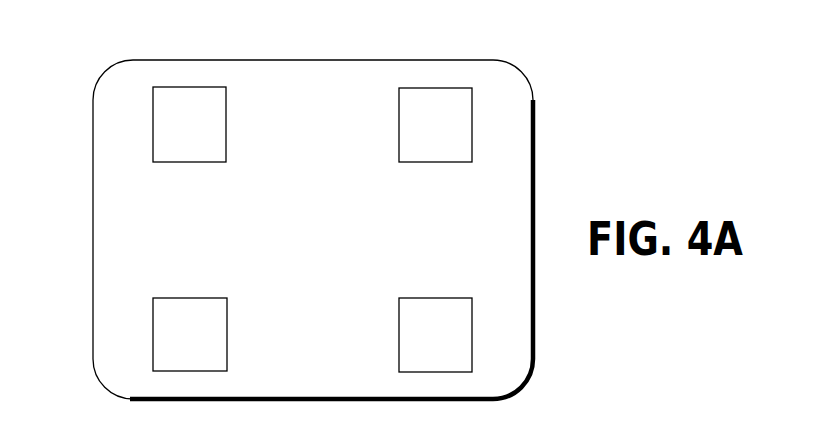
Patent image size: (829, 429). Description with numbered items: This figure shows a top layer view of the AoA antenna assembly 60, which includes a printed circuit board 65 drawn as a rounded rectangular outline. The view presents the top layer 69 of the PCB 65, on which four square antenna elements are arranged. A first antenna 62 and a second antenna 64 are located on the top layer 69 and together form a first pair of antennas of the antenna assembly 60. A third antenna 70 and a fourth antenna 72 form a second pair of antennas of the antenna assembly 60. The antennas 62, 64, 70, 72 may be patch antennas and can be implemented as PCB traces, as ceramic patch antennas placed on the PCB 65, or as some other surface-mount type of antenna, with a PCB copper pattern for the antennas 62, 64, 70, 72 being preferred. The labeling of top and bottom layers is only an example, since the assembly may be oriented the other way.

The AoA antenna assembly 60 is at (557, 41).
The first antenna 62 is at (188, 298).
The second antenna 64 is at (440, 298).
The printed circuit board 65 is at (537, 208).
The top layer 69 is at (123, 228).
The third antenna 70 is at (188, 87).
The fourth antenna 72 is at (438, 88).